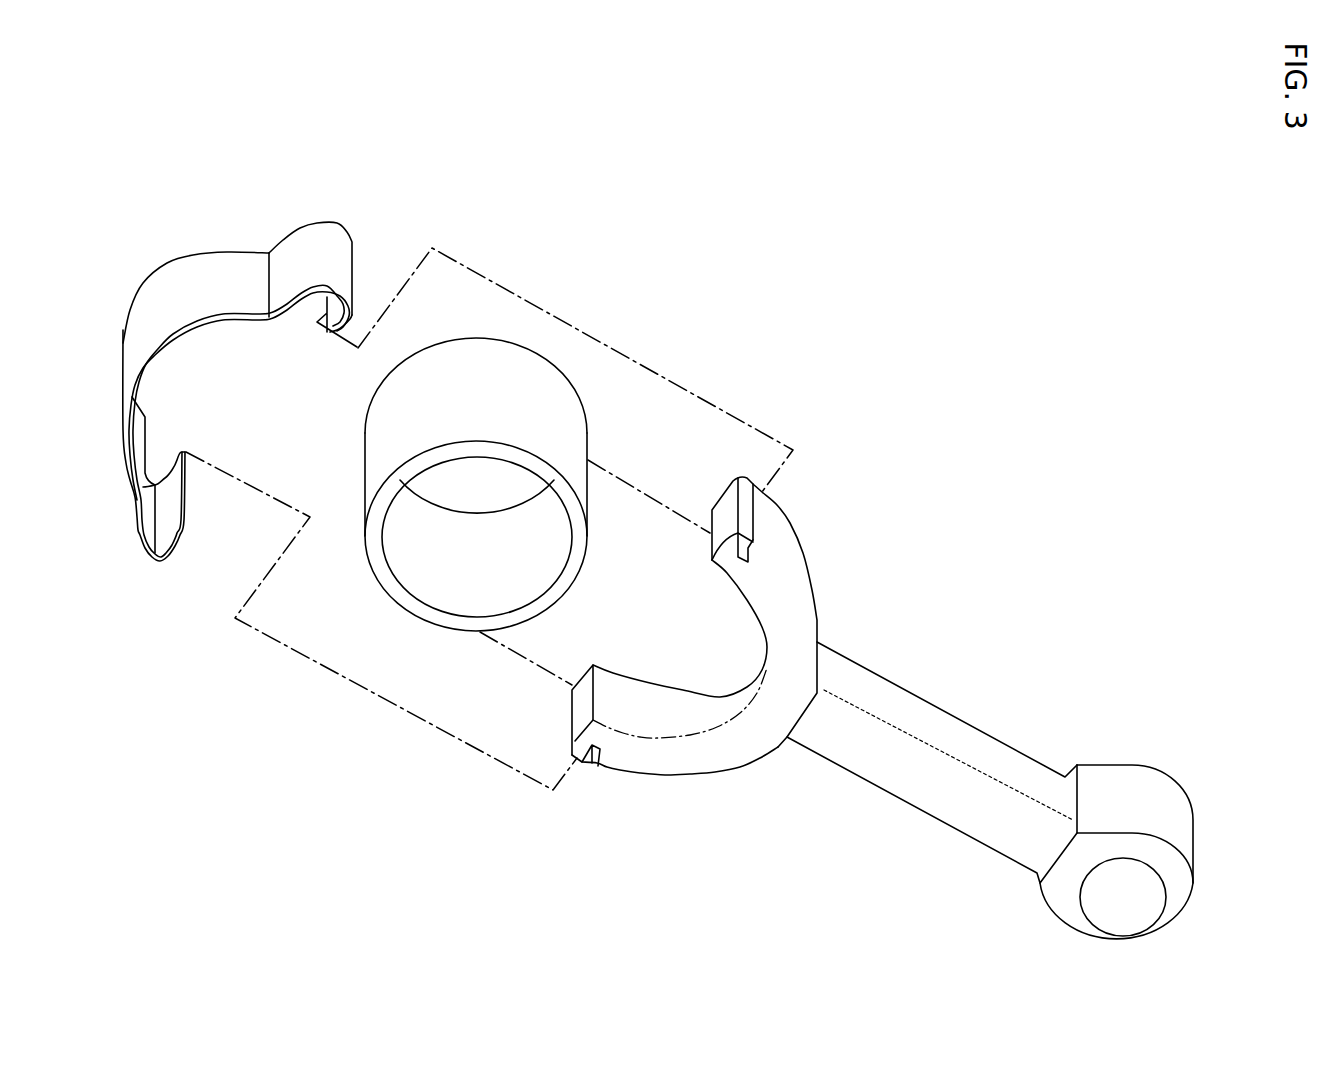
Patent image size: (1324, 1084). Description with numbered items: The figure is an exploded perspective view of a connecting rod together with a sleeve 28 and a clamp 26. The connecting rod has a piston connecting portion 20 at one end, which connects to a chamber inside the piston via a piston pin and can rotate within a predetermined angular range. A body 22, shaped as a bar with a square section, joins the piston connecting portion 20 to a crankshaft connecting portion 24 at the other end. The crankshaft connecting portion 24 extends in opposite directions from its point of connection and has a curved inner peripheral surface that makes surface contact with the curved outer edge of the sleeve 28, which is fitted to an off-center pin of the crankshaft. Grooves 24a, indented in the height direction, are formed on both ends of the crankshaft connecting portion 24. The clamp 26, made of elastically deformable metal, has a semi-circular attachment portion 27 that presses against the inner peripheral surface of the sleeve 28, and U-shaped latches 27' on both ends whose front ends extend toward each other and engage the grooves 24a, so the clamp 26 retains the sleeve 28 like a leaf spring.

The piston connecting portion 20 is at (1137, 782).
The body 22 is at (943, 728).
The crankshaft connecting portion 24 is at (795, 560).
The grooves 24a is at (757, 538).
The clamp 26 is at (152, 300).
The attachment portion 27 is at (121, 445).
The latches 27' is at (223, 383).
The sleeve 28 is at (365, 455).